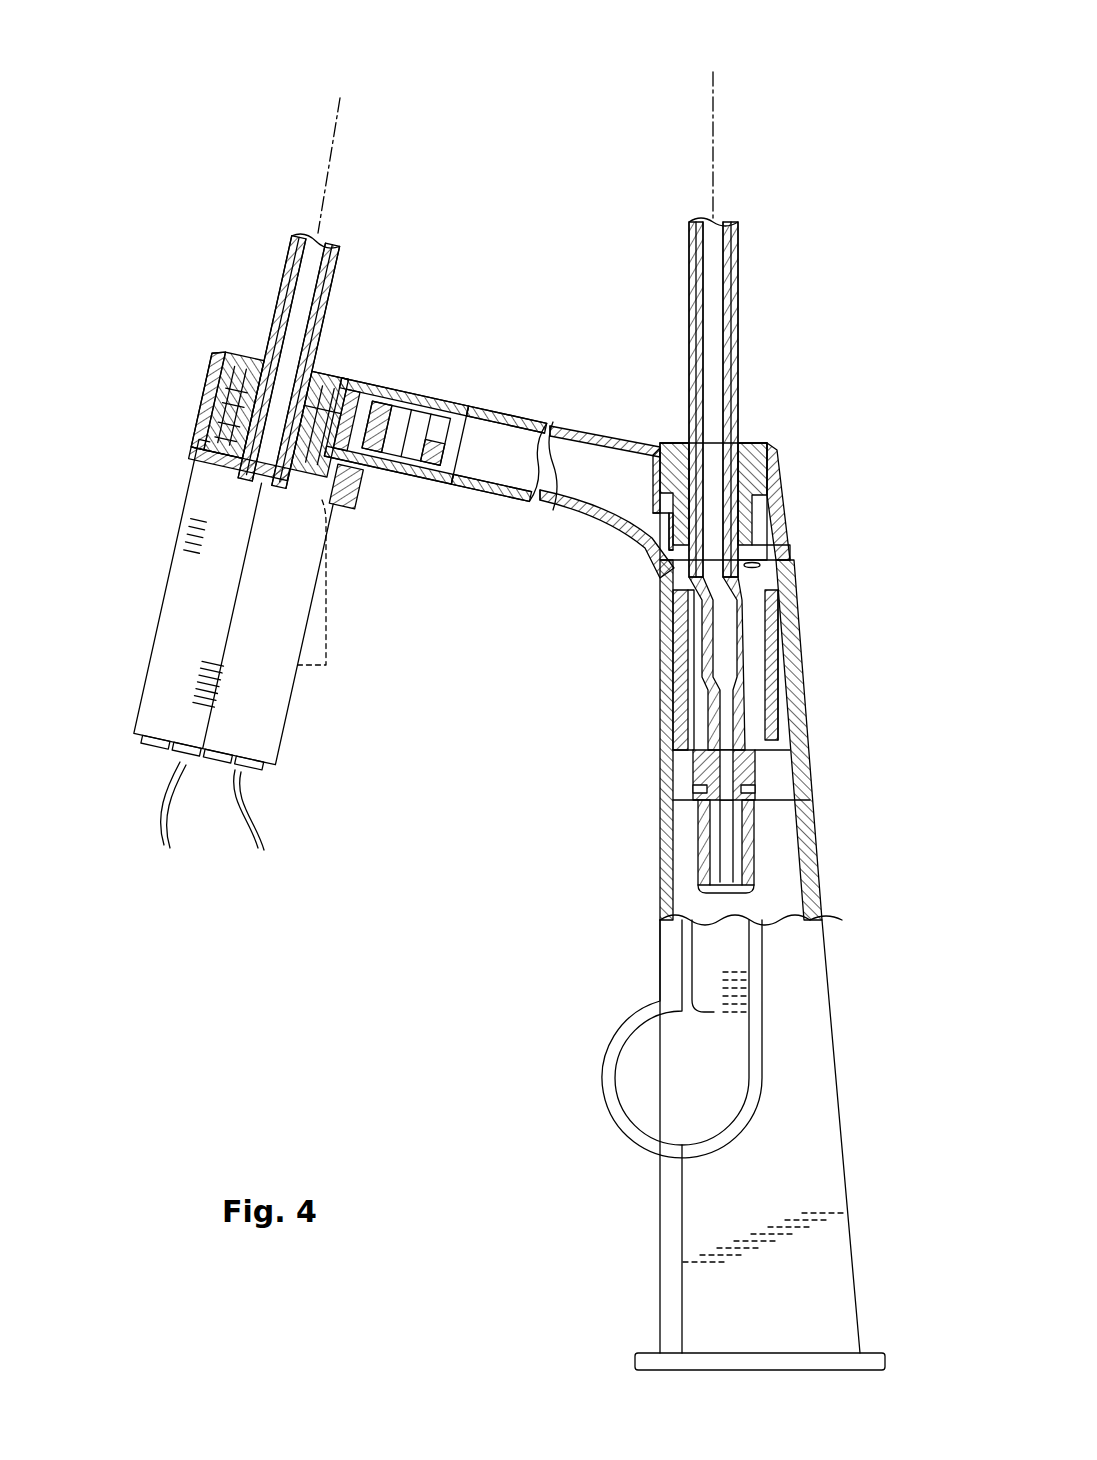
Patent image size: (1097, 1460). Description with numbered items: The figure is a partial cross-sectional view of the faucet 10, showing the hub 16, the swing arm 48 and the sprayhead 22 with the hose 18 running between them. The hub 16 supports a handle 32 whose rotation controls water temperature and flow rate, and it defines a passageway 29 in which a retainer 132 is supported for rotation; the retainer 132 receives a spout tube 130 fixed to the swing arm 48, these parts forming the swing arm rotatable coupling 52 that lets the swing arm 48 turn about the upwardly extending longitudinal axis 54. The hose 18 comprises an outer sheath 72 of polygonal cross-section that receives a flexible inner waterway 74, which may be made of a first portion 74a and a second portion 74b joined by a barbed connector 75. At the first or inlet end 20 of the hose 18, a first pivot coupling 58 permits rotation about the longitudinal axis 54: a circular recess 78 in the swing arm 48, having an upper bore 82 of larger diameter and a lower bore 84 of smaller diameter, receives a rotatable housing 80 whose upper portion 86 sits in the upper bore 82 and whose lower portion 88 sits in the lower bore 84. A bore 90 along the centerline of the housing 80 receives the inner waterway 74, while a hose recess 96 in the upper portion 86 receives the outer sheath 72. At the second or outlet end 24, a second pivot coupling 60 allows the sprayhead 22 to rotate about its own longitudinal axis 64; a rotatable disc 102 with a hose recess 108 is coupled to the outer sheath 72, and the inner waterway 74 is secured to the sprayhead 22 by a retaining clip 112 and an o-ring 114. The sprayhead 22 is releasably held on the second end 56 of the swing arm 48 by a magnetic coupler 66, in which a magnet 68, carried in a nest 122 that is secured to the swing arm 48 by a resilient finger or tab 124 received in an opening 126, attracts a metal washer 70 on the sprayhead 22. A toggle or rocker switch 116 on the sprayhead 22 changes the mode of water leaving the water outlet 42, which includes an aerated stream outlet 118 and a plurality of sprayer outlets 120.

The faucet 10 is at (839, 131).
The hub 16 is at (850, 992).
The hose 18 is at (683, 264).
The first or inlet end 20 is at (678, 420).
The sprayhead 22 is at (302, 715).
The second or outlet end 24 is at (338, 360).
The passageway 29 is at (690, 745).
The handle 32 is at (710, 948).
The water outlet 42 is at (165, 752).
The swing arm 48 is at (530, 410).
The swing arm rotatable coupling 52 is at (798, 610).
The longitudinal axis 54 is at (700, 72).
The second end 56 is at (345, 487).
The first pivot coupling 58 is at (775, 420).
The second pivot coupling 60 is at (258, 338).
The longitudinal axis of the sprayhead 64 is at (340, 98).
The magnetic coupler 66 is at (438, 385).
The magnet 68 is at (388, 392).
The metal washer 70 is at (232, 462).
The outer sheath 72 is at (736, 246).
The inner waterway 74 is at (703, 222).
The first portion of inner waterway 74a is at (705, 655).
The second portion of inner waterway 74b is at (760, 840).
The barbed connector 75 is at (700, 815).
The circular recess 78 is at (770, 452).
The rotatable housing 80 is at (790, 482).
The upper bore 82 is at (760, 508).
The lower bore 84 is at (762, 545).
The upper portion 86 is at (667, 452).
The lower portion 88 is at (655, 545).
The bore 90 is at (650, 502).
The hose recess 96 is at (738, 436).
The rotatable disc 102 is at (222, 352).
The hose recess 108 is at (330, 368).
The retaining clip 112 is at (220, 398).
The o-ring 114 is at (222, 482).
The toggle or rocker switch 116 is at (326, 658).
The aerated stream outlet 118 is at (165, 821).
The sprayer outlets 120 is at (257, 825).
The nest 122 is at (490, 405).
The resilient finger or tab 124 is at (425, 485).
The opening 126 is at (455, 478).
The spout tube 130 is at (790, 650).
The retainer 132 is at (800, 705).